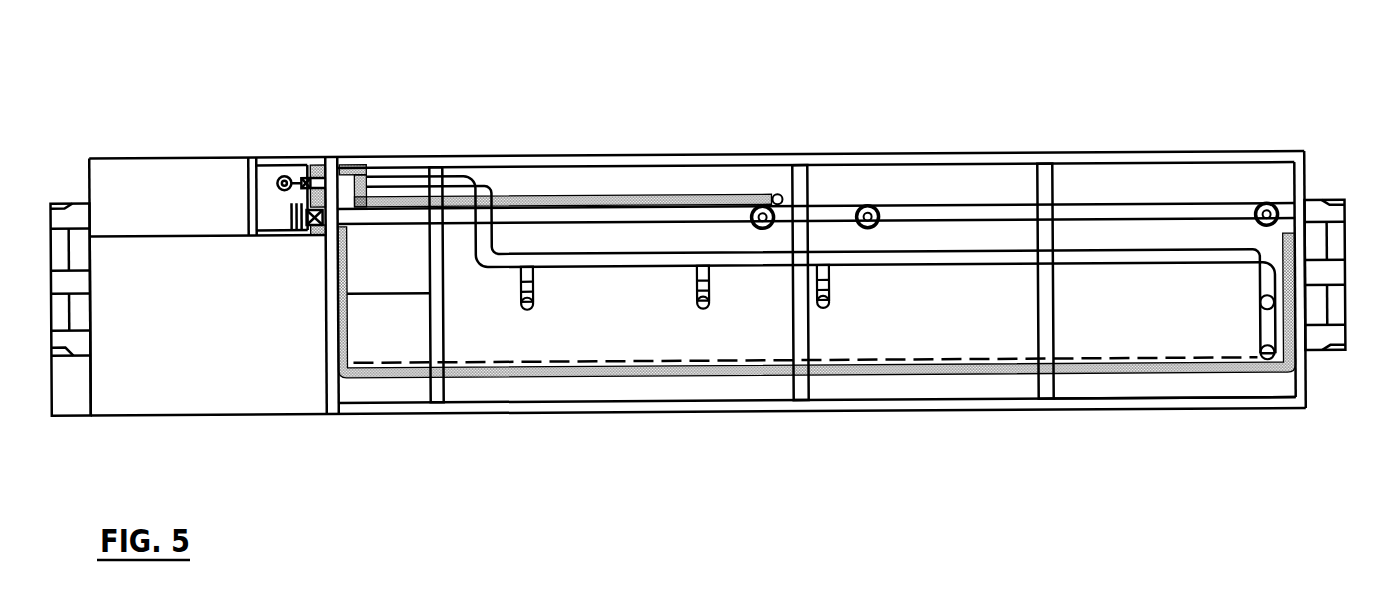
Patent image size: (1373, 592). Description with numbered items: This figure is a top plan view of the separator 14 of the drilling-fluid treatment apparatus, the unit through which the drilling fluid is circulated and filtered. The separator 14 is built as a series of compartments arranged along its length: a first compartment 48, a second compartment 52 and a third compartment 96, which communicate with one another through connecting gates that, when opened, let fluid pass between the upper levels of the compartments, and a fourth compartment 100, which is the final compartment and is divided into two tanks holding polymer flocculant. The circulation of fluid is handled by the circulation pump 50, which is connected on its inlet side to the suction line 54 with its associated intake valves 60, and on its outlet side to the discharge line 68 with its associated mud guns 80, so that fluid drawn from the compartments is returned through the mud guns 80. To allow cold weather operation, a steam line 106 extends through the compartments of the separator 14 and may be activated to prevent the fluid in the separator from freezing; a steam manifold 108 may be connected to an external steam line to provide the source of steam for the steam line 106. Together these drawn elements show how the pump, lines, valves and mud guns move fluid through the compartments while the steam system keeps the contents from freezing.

The separator 14 is at (1137, 66).
The first compartment 48 is at (1215, 348).
The circulation pump 50 is at (273, 176).
The second compartment 52 is at (918, 355).
The suction line 54 is at (830, 207).
The intake valves 60 is at (757, 203).
The discharge line 68 is at (660, 266).
The mud guns 80 is at (527, 310).
The third compartment 96 is at (610, 335).
The fourth compartment 100 is at (382, 330).
The steam line 106 is at (417, 377).
The steam manifold 108 is at (670, 194).